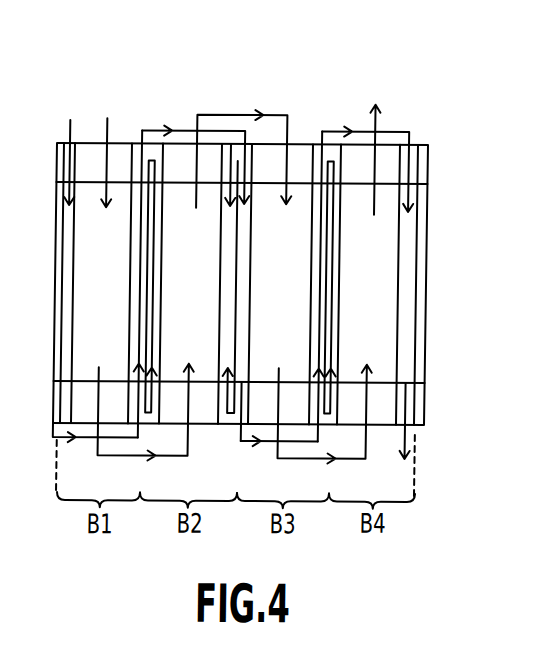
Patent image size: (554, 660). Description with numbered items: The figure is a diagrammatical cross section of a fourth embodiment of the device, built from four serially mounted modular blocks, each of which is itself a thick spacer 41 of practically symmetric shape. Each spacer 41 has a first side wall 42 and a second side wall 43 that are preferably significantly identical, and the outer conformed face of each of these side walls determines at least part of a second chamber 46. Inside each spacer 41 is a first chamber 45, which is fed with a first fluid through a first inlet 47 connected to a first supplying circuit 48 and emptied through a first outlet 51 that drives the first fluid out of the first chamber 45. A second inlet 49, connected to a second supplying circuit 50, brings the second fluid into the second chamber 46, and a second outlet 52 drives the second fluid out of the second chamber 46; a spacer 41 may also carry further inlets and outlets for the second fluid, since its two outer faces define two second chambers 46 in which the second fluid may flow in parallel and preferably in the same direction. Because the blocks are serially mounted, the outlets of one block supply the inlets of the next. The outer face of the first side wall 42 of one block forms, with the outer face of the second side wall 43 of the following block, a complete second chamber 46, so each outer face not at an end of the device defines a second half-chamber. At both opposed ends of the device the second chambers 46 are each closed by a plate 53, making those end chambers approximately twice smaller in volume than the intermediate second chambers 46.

The thick spacer 41 is at (97, 152).
The first side wall 42 is at (133, 261).
The second side wall 43 is at (81, 256).
The first chamber 45 is at (89, 306).
The second chamber 46 is at (71, 335).
The first inlet 47 is at (116, 158).
The first supplying circuit 48 is at (107, 118).
The second inlet 49 is at (60, 161).
The second supplying circuit 50 is at (70, 120).
The first outlet 51 is at (106, 410).
The second outlet 52 is at (58, 428).
The plate 53 is at (62, 218).